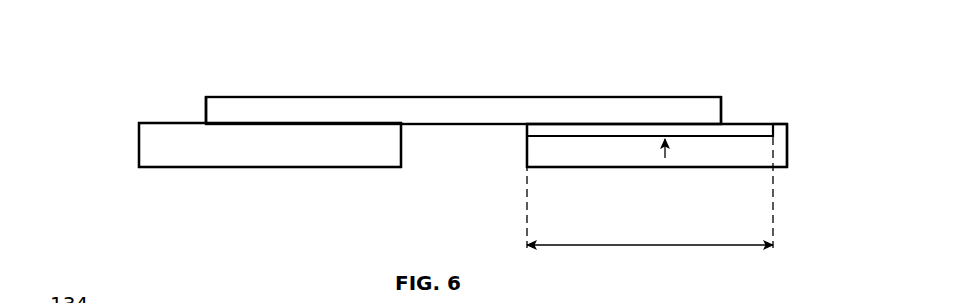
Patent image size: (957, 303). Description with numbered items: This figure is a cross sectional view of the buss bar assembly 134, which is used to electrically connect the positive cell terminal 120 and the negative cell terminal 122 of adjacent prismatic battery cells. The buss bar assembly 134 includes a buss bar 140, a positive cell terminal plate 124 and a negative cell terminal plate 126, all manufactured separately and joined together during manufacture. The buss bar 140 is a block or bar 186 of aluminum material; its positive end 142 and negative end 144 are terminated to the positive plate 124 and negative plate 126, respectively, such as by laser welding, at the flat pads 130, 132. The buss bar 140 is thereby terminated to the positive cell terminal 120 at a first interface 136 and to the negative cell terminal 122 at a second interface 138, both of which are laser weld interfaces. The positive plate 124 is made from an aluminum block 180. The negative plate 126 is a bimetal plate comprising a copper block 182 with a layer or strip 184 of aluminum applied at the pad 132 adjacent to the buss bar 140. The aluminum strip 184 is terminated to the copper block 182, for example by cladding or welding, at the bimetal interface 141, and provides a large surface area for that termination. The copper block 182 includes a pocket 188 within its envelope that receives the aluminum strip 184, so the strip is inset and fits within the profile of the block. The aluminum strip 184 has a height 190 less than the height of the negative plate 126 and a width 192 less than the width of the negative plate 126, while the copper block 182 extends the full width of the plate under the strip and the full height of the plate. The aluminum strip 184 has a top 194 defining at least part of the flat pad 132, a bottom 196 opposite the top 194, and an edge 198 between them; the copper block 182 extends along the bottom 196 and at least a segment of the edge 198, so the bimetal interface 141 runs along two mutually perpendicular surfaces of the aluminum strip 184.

The positive cell terminal 120 is at (245, 155).
The negative cell terminal 122 is at (707, 148).
The positive cell terminal plate 124 is at (148, 157).
The negative cell terminal plate 126 is at (780, 155).
The flat pad 130 is at (152, 124).
The flat pad 132 is at (748, 123).
The buss bar assembly 134 is at (125, 60).
The first interface 136 is at (200, 120).
The second interface 138 is at (728, 120).
The buss bar 140 is at (393, 103).
The bimetal interface 141 is at (780, 130).
The positive end 142 is at (220, 97).
The negative end 144 is at (710, 102).
The aluminum block 180 is at (327, 155).
The copper block 182 is at (568, 157).
The aluminum strip 184 is at (573, 124).
The bar 186 is at (463, 105).
The pocket 188 is at (728, 140).
The height 190 is at (665, 122).
The width 192 is at (630, 243).
The top 194 is at (618, 123).
The bottom 196 is at (537, 138).
The edge 198 is at (782, 123).